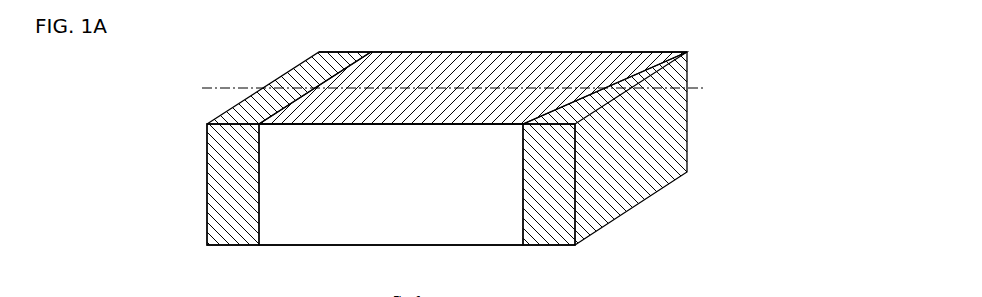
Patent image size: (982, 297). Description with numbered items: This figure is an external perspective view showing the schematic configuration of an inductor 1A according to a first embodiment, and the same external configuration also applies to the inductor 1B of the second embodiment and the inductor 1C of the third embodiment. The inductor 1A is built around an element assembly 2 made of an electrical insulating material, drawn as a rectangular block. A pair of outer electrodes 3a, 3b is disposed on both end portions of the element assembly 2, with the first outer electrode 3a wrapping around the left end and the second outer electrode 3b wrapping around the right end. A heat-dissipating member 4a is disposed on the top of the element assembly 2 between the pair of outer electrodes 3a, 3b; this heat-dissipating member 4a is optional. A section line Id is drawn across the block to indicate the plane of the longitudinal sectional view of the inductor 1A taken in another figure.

The inductor 1A is at (540, 129).
The inductor 1B is at (540, 129).
The inductor 1C is at (768, 100).
The element assembly 2 is at (388, 222).
The outer electrode 3a is at (212, 182).
The outer electrode 3b is at (626, 173).
The heat-dissipating member 4a is at (450, 63).
The section line Id is at (228, 65).